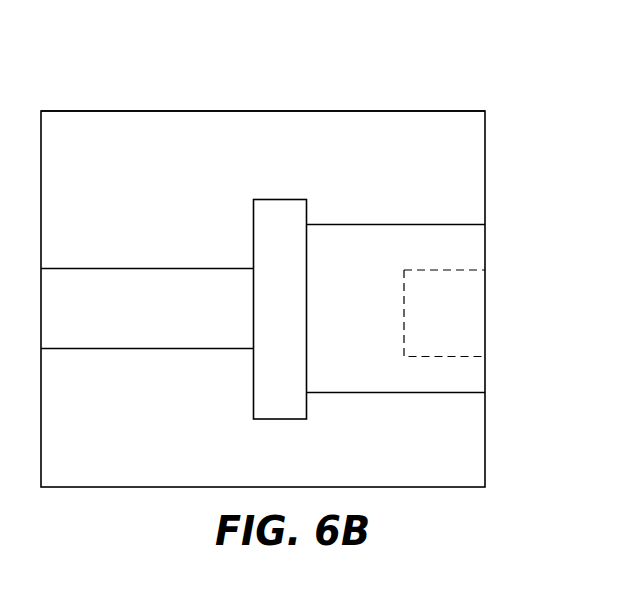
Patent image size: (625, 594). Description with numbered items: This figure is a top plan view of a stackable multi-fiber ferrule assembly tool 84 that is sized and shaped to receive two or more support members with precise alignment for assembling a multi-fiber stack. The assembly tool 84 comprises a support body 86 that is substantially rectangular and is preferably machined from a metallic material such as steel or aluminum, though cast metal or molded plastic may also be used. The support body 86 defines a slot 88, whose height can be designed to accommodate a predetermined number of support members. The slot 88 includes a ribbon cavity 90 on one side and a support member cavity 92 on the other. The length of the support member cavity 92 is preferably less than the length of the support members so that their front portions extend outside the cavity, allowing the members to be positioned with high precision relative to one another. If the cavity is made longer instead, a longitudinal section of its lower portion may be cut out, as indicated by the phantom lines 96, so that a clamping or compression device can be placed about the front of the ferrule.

The assembly tool 84 is at (455, 80).
The support body 86 is at (137, 111).
The slot 88 is at (238, 327).
The ribbon cavity 90 is at (111, 277).
The support member cavity 92 is at (458, 375).
The phantom lines 96 is at (432, 280).